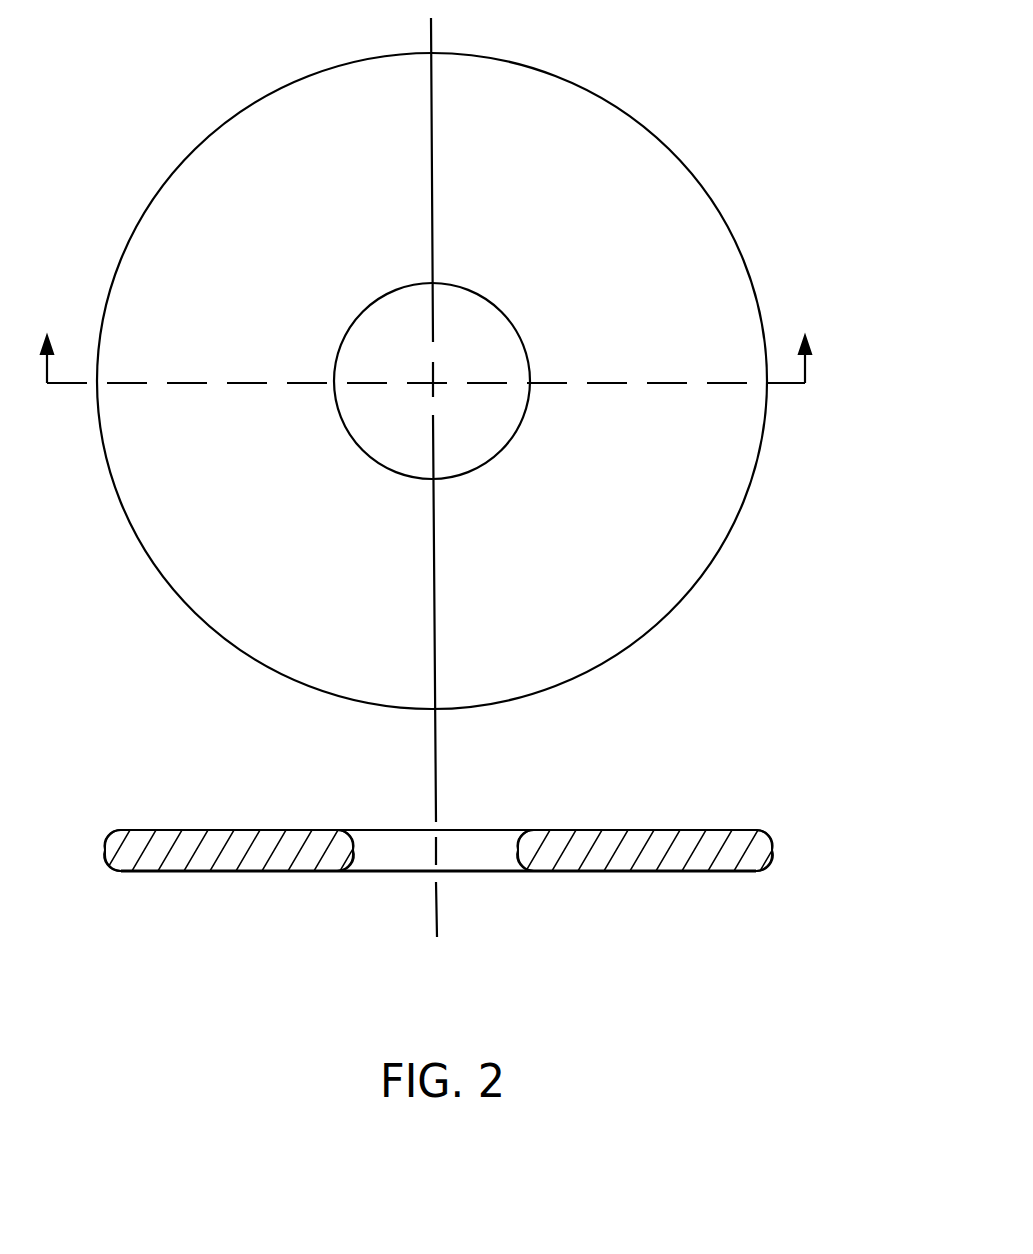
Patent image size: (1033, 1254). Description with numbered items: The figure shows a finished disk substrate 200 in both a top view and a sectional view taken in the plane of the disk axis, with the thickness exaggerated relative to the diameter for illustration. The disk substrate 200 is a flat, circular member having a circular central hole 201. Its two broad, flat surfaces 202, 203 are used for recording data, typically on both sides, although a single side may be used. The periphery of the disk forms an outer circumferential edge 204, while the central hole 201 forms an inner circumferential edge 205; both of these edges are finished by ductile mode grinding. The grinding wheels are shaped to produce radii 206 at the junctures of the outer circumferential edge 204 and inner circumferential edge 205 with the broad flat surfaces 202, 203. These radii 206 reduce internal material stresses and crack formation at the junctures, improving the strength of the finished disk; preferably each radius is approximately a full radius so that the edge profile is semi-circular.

The finished disk substrate 200 is at (712, 116).
The circular central hole 201 is at (407, 440).
The broad flat surface 202 is at (193, 830).
The broad flat surface 203 is at (208, 872).
The outer circumferential edge 204 is at (728, 538).
The inner circumferential edge 205 is at (478, 468).
The radii 206 is at (107, 834).